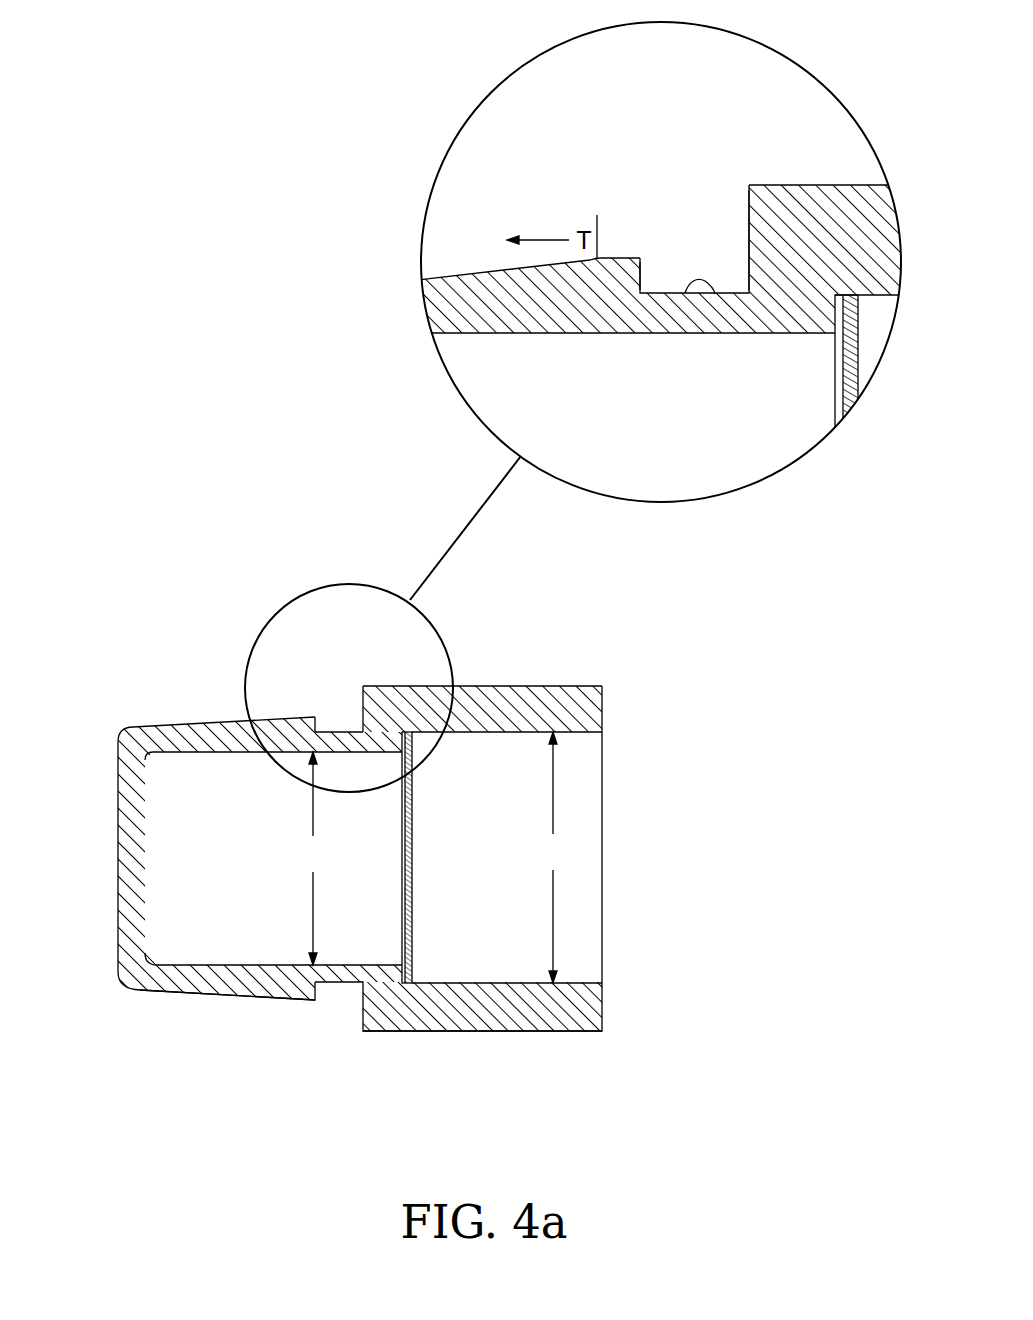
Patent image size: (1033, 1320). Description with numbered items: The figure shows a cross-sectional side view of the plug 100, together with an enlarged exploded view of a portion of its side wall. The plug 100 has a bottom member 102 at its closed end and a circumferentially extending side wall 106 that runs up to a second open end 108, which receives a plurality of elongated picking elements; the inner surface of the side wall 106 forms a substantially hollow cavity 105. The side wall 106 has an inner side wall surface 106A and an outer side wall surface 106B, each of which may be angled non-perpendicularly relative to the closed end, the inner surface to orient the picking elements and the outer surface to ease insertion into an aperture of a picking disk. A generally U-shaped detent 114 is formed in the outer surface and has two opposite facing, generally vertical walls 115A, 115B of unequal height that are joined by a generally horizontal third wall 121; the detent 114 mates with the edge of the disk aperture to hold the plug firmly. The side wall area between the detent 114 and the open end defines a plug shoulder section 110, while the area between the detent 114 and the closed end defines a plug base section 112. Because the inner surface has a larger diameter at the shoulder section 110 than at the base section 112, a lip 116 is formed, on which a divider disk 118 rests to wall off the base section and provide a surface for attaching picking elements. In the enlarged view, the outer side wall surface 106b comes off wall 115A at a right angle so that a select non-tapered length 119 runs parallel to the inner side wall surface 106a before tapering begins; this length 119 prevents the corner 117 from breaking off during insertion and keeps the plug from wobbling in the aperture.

The plug 100 is at (133, 598).
The bottom member 102 is at (376, 839).
The hollow cavity 105 is at (203, 895).
The side wall 106 is at (212, 726).
The inner side wall surface 106A is at (215, 752).
The outer side wall surface 106B is at (150, 726).
The inner side wall surface 106a is at (643, 333).
The outer side wall surface 106b is at (778, 185).
The second open end 108 is at (519, 903).
The plug shoulder section 110 is at (505, 1033).
The plug base section 112 is at (173, 1000).
The detent 114 is at (336, 714).
The first facing wall of detent 115A is at (748, 225).
The second facing wall of detent 115B is at (658, 284).
The lip 116 is at (390, 964).
The corner 117 is at (630, 272).
The divider disk 118 is at (413, 798).
The select length 119 is at (620, 257).
The third wall 121 is at (715, 294).